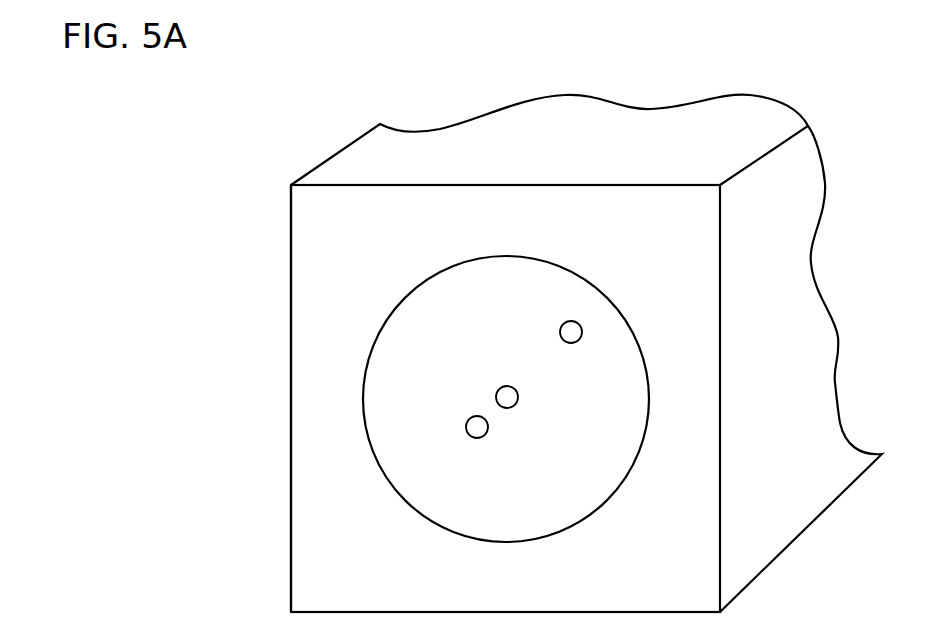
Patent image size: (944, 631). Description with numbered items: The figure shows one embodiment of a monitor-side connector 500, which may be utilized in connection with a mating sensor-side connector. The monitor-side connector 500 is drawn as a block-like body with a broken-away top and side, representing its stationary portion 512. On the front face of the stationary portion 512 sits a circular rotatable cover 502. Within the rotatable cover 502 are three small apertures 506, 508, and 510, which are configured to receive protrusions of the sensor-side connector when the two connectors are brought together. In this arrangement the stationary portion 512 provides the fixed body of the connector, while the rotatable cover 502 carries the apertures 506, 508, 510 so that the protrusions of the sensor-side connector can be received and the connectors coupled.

The monitor-side connector 500 is at (314, 119).
The rotatable cover 502 is at (452, 265).
The aperture 506 is at (488, 430).
The aperture 508 is at (517, 403).
The aperture 510 is at (582, 338).
The stationary portion 512 is at (291, 380).